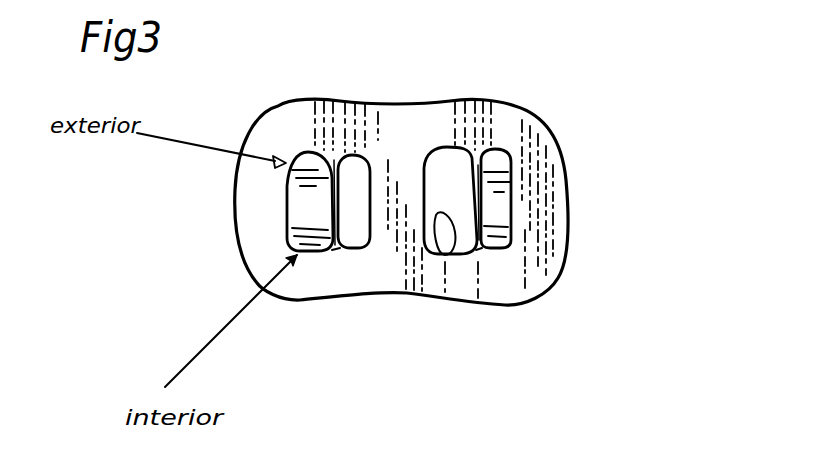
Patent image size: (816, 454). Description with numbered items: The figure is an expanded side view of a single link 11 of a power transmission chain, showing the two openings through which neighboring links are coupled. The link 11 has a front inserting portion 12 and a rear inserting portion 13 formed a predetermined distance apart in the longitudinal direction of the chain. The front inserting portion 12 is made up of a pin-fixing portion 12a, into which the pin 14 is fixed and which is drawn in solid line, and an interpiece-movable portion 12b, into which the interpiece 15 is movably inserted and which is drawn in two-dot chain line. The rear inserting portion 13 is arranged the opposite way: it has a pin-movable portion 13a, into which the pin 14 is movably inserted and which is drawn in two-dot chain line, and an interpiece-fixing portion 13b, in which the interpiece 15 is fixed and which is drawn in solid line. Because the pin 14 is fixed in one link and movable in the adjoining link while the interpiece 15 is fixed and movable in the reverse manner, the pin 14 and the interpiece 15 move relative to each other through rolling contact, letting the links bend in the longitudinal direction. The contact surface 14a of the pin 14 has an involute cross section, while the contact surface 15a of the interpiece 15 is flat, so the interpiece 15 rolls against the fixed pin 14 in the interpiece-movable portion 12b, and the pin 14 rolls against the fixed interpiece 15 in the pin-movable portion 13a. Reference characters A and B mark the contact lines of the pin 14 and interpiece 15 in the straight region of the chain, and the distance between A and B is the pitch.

The link 11 is at (563, 178).
The front inserting portion 12 is at (282, 233).
The pin-fixing portion 12a is at (288, 205).
The interpiece-movable portion 12b is at (370, 252).
The rear inserting portion 13 is at (535, 228).
The pin-movable portion 13a is at (447, 258).
The interpiece-fixing portion 13b is at (511, 236).
The pin 14 is at (300, 241).
The contact surface of the pin 14a is at (336, 153).
The interpiece 15 is at (357, 252).
The contact surface of the interpiece 15a is at (477, 165).
The contact line A is at (320, 254).
The contact line B is at (489, 250).